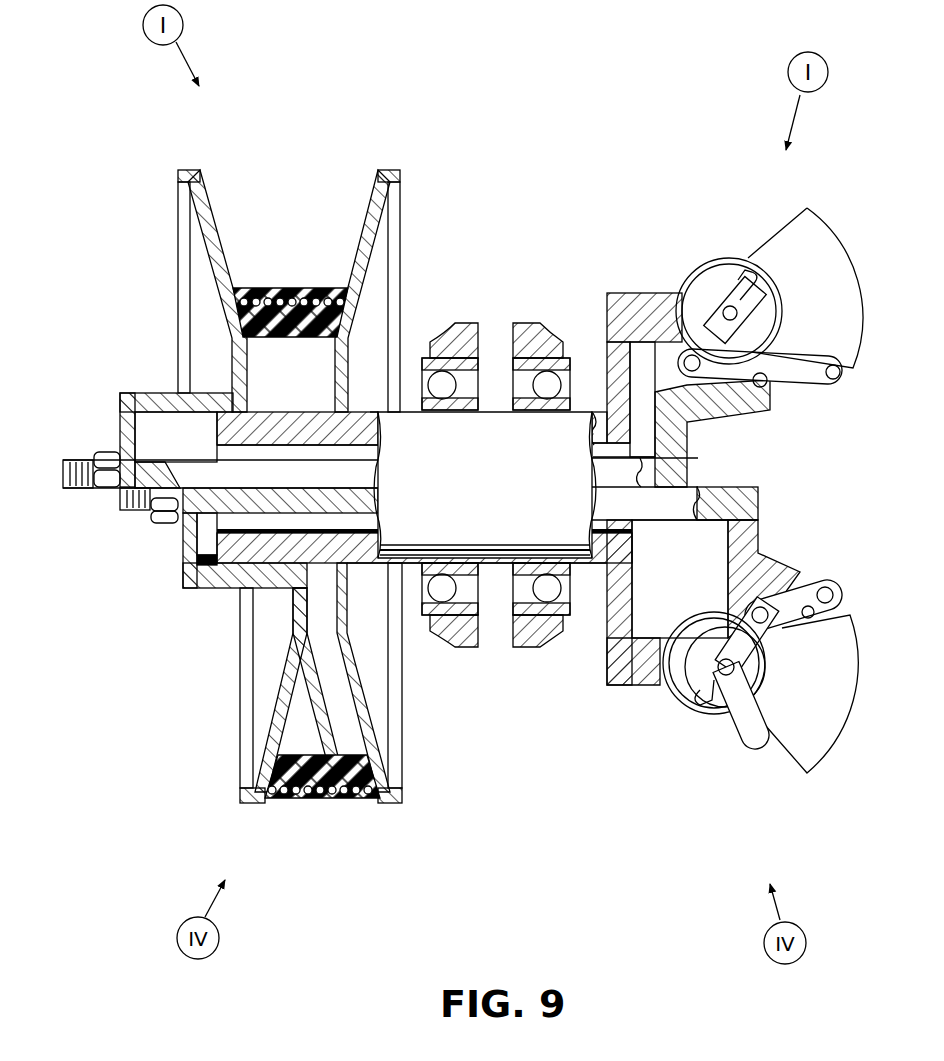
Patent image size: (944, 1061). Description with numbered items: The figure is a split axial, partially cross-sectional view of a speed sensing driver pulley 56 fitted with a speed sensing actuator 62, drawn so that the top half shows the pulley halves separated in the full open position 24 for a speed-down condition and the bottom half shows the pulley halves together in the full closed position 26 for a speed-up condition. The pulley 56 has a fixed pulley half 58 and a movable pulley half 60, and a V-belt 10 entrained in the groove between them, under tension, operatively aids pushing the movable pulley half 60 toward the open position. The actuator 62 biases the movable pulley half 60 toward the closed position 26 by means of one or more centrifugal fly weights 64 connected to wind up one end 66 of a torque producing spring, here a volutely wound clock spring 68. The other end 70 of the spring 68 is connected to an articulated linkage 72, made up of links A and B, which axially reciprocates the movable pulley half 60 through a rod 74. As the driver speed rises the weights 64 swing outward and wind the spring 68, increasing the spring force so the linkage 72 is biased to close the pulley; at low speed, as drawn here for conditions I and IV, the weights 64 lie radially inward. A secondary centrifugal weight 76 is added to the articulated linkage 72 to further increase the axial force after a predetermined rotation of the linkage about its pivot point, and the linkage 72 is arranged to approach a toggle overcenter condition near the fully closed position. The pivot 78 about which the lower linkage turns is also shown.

The V-belt 10 is at (283, 288).
The full open position 24 is at (331, 108).
The full closed position 26 is at (320, 823).
The speed sensing pulley 56 is at (553, 142).
The fixed pulley half 58 is at (400, 237).
The movable pulley half 60 is at (178, 232).
The speed sensing actuator 62 is at (862, 383).
The centrifugal fly weight 64 is at (807, 208).
The end of spring 66 is at (821, 378).
The volutely wound clock spring 68 is at (766, 390).
The other end of spring 70 is at (688, 262).
The articulated linkage 72 is at (665, 365).
The rod 74 is at (65, 460).
The secondary centrifugal weight 76 is at (760, 730).
The pivot pin 78 is at (728, 677).